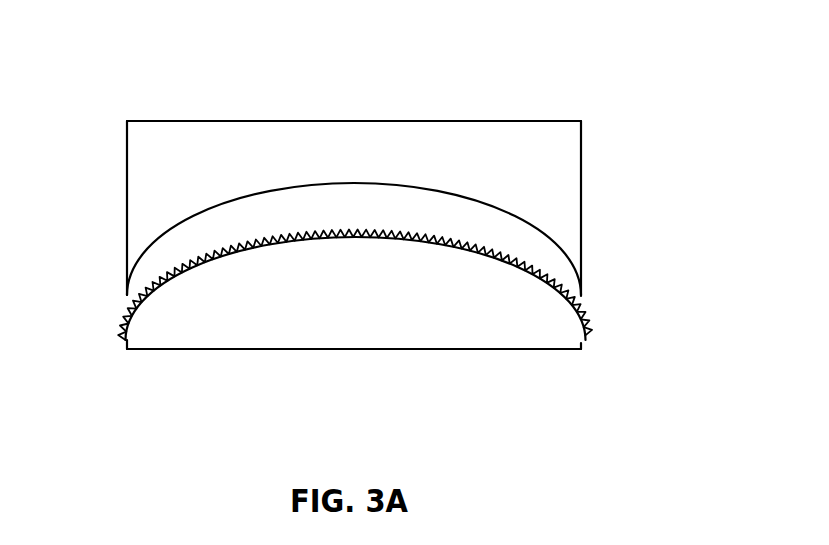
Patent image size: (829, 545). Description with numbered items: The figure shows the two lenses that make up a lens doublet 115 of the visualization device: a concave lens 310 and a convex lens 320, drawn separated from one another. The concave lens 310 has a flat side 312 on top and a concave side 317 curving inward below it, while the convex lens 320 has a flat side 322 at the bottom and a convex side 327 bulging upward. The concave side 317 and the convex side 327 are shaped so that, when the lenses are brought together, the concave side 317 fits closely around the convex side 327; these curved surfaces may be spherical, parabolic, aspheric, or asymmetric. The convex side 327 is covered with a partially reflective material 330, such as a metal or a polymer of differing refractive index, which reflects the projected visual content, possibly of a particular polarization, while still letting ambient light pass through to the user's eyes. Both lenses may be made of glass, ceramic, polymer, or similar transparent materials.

The concave lens 310 is at (533, 167).
The flat side 312 is at (213, 121).
The concave side 317 is at (240, 197).
The convex lens 320 is at (498, 315).
The flat side 322 is at (253, 350).
The convex side 327 is at (180, 273).
The partially reflective material 330 is at (583, 320).
The lens doublet 115 is at (678, 481).